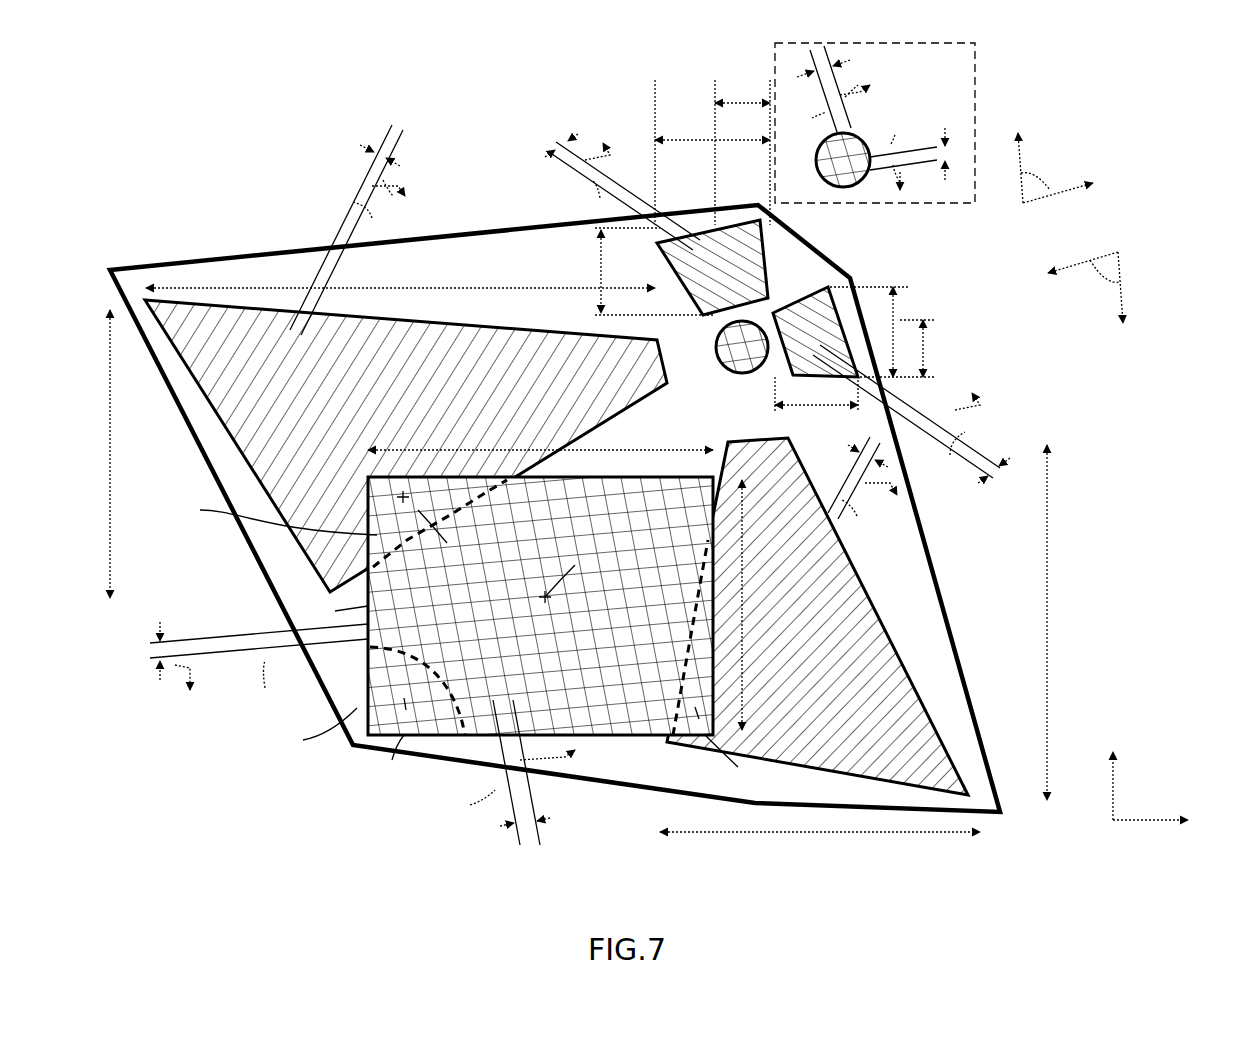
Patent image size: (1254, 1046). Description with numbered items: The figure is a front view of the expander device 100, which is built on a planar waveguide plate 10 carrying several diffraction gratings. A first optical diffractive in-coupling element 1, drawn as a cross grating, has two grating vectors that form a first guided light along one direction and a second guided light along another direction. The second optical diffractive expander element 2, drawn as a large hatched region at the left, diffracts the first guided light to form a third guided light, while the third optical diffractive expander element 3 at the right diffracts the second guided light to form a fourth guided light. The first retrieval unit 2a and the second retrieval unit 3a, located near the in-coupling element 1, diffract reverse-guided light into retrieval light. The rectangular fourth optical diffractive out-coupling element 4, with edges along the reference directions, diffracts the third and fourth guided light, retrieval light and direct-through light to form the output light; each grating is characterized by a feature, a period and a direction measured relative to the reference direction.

The expander device 100 is at (212, 148).
The planar waveguide plate 10 is at (478, 228).
The second optical diffractive expander element 2 is at (173, 317).
The first retrieval unit 2a is at (707, 228).
The first optical diffractive in-coupling element 1 is at (768, 318).
The second retrieval unit 3a is at (827, 287).
The third optical diffractive expander element 3 is at (928, 738).
The fourth optical diffractive out-coupling element 4 is at (710, 835).